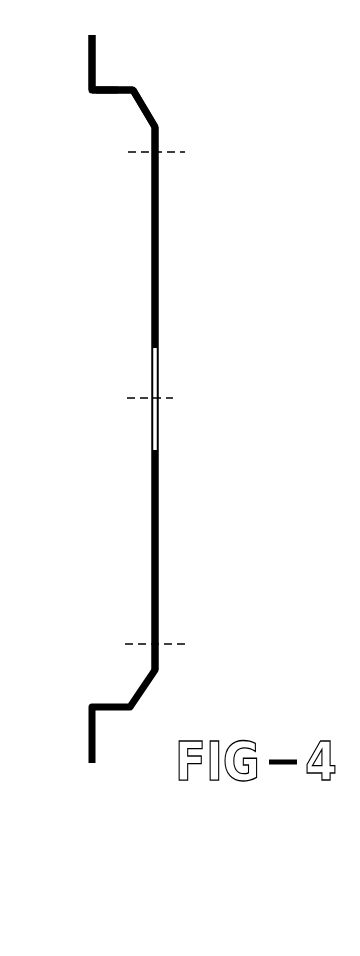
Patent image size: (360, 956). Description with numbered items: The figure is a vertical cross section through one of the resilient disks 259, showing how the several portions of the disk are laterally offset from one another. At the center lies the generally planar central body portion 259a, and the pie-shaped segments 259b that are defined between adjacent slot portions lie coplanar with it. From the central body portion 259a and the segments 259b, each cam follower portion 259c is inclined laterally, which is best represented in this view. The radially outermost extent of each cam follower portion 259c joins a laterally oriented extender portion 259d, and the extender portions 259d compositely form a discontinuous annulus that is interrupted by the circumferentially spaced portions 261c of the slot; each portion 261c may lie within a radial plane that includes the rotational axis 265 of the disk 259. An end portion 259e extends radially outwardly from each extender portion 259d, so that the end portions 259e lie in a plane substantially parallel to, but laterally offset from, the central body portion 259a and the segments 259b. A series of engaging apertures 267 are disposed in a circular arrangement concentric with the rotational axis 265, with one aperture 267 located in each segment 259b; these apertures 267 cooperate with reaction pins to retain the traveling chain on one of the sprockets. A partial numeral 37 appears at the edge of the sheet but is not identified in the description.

The resilient disk 259 is at (213, 280).
The central body portion 259a is at (158, 330).
The pie-shaped segment 259b is at (158, 200).
The cam follower portion 259c is at (153, 112).
The extender portion 259d is at (117, 88).
The end portion 259e is at (88, 55).
The portion of the slot 261c is at (112, 97).
The rotational axis 265 is at (170, 397).
The engaging aperture 267 is at (157, 147).
The partial numeral at page edge 37 is at (10, 323).